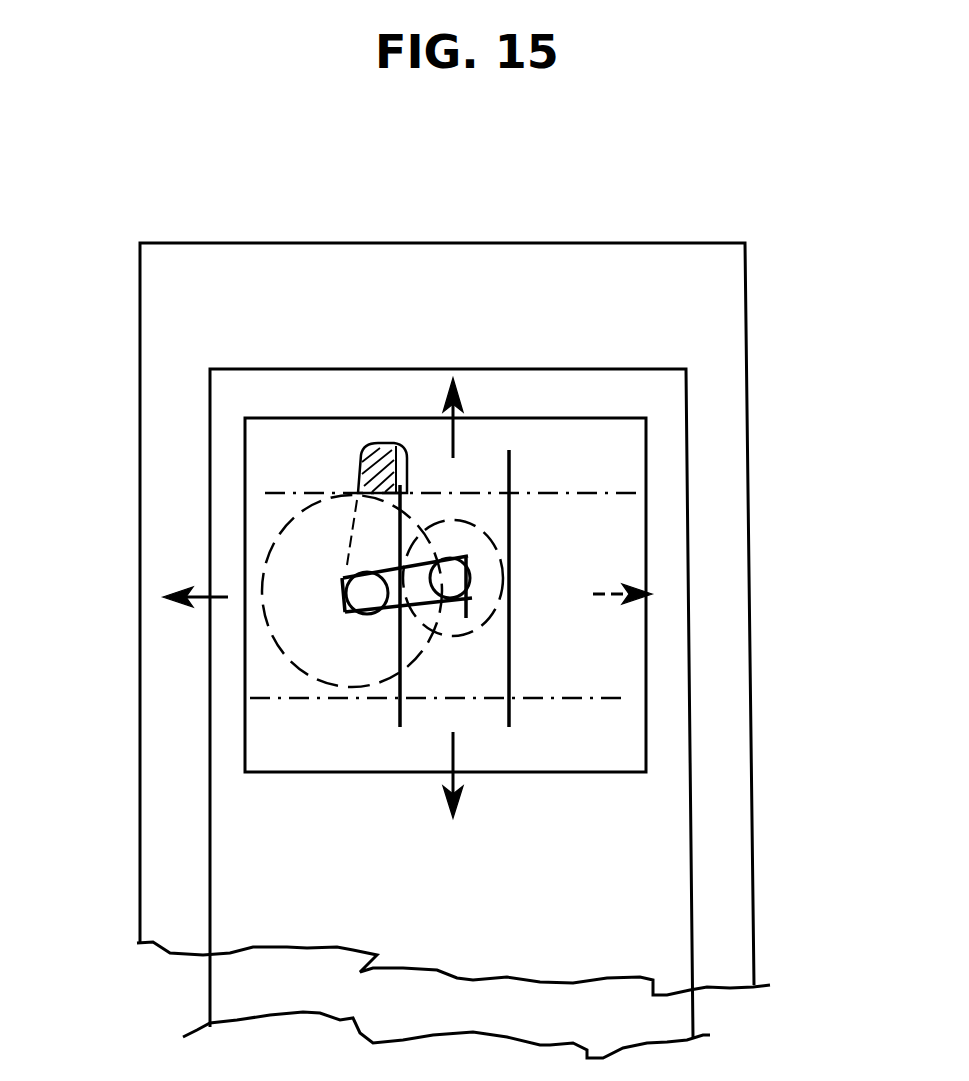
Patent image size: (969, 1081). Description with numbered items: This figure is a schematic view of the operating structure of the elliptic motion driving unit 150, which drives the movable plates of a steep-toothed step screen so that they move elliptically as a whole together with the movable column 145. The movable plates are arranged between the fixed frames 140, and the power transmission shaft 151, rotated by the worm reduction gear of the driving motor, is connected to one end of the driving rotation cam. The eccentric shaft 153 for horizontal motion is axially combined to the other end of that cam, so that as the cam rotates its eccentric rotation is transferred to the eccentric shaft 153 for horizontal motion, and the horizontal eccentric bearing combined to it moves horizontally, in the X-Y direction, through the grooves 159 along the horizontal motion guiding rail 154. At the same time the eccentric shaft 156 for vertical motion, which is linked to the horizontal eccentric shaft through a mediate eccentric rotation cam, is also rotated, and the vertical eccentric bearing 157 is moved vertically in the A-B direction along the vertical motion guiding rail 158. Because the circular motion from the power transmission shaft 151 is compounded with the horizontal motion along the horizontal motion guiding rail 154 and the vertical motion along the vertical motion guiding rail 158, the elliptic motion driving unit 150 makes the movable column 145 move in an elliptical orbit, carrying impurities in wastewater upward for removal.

The elliptic motion driving unit 150 is at (712, 229).
The fixed frame 140 is at (742, 325).
The movable column 145 is at (686, 425).
The power transmission shaft 151 is at (360, 467).
The eccentric shaft for horizontal motion 153 is at (350, 610).
The horizontal motion guiding rail 154 is at (620, 700).
The eccentric shaft for vertical motion 156 is at (433, 520).
The vertical eccentric bearing 157 is at (470, 560).
The vertical motion guiding rail 158 is at (513, 663).
The grooves 159 is at (357, 670).